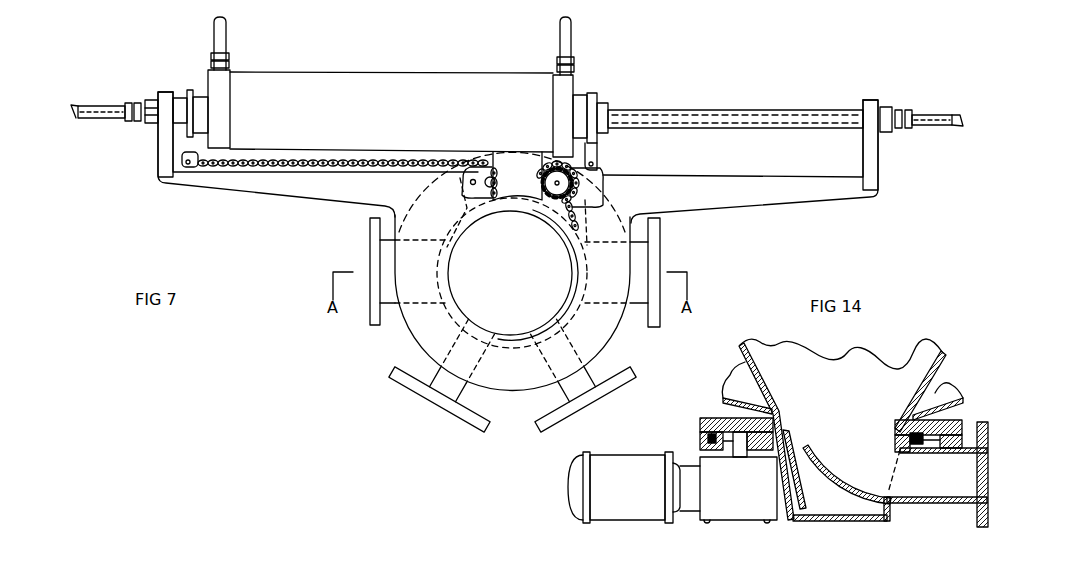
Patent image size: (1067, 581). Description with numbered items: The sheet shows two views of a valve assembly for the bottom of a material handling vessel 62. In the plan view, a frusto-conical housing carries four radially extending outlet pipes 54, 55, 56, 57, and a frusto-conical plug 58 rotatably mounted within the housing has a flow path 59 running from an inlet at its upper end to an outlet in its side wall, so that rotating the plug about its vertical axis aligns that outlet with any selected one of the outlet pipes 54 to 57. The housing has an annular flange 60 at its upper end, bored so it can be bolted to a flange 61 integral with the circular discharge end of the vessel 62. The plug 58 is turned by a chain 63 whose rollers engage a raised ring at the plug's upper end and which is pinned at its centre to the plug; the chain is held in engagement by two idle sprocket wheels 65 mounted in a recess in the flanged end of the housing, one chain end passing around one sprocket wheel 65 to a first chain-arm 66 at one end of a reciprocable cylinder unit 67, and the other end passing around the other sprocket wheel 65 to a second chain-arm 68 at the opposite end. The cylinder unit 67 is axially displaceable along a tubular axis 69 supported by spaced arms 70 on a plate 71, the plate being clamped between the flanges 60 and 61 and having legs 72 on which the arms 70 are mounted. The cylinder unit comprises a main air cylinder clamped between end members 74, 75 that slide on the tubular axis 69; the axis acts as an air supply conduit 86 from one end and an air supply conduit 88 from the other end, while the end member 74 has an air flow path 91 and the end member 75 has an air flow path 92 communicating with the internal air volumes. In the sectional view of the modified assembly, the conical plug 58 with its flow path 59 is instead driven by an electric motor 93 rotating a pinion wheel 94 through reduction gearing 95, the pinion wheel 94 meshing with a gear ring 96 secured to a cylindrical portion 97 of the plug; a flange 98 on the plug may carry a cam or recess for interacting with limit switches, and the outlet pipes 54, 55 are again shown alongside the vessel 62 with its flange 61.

In FIG. 7, the outlet pipe 54 is at (643, 257).
In FIG. 14, the outlet pipe 54 is at (962, 473).
In FIG. 7, the outlet pipe 55 is at (590, 382).
In FIG. 14, the outlet pipe 55 is at (793, 517).
In FIG. 7, the outlet pipe 56 is at (433, 380).
In FIG. 7, the outlet pipe 57 is at (385, 293).
In FIG. 14, the frusto-conical plug 58 is at (810, 506).
In FIG. 7, the flow path 59 is at (513, 275).
In FIG. 14, the flow path 59 is at (864, 455).
In FIG. 7, the annular flange 60 is at (427, 195).
In FIG. 14, the flange 61 is at (962, 420).
In FIG. 14, the material handling vessel 62 is at (910, 367).
In FIG. 7, the chain 63 is at (302, 158).
In FIG. 7, the idle sprocket wheel 65 is at (491, 172).
In FIG. 7, the first chain-arm 66 is at (188, 168).
In FIG. 7, the reciprocable cylinder unit 67 is at (400, 118).
In FIG. 7, the second chain-arm 68 is at (598, 153).
In FIG. 7, the tubular axis 69 is at (754, 110).
In FIG. 7, the arm 70 is at (159, 147).
In FIG. 7, the plate 71 is at (418, 323).
In FIG. 7, the leg 72 is at (270, 195).
In FIG. 7, the end member 74 is at (213, 83).
In FIG. 7, the end member 75 is at (574, 84).
In FIG. 7, the air supply conduit 86 is at (963, 117).
In FIG. 7, the air supply conduit 88 is at (76, 106).
In FIG. 7, the air flow path 91 is at (228, 44).
In FIG. 7, the air flow path 92 is at (573, 43).
In FIG. 14, the electric motor 93 is at (632, 496).
In FIG. 14, the pinion wheel 94 is at (717, 417).
In FIG. 14, the reduction gearing 95 is at (750, 499).
In FIG. 14, the gear ring 96 is at (778, 417).
In FIG. 14, the cylindrical portion 97 is at (790, 438).
In FIG. 14, the flange 98 is at (990, 430).